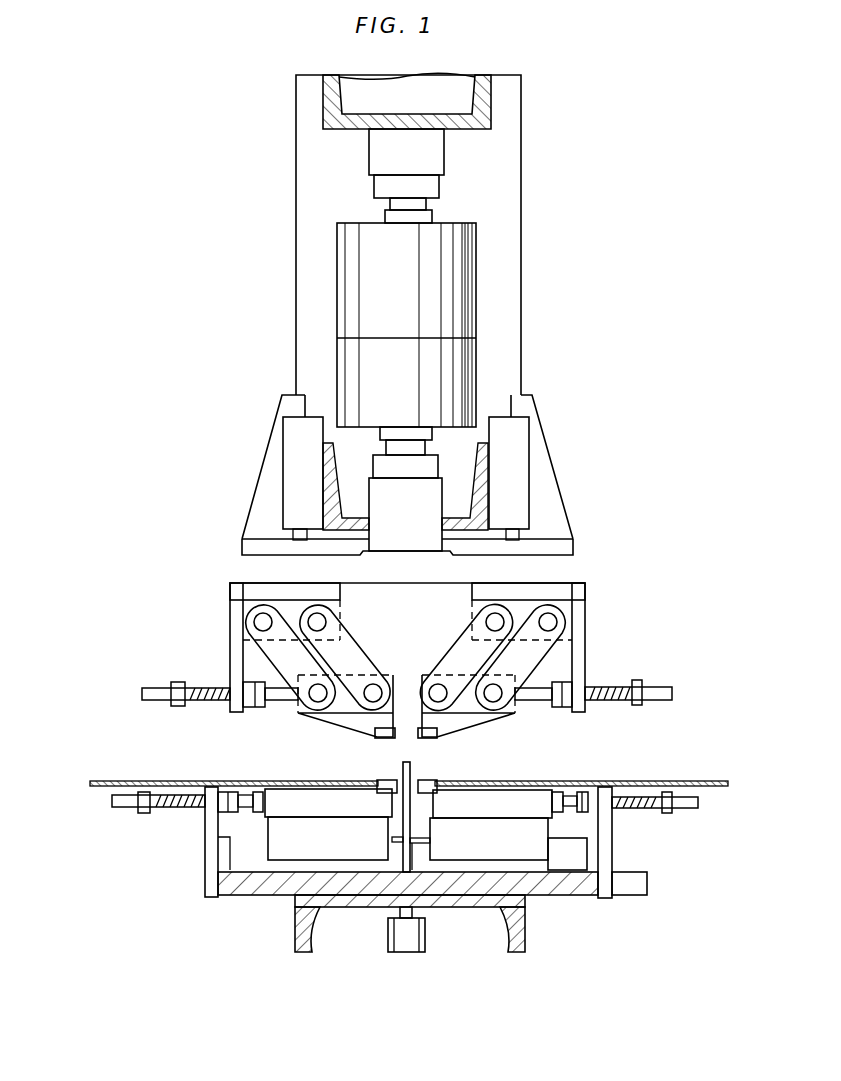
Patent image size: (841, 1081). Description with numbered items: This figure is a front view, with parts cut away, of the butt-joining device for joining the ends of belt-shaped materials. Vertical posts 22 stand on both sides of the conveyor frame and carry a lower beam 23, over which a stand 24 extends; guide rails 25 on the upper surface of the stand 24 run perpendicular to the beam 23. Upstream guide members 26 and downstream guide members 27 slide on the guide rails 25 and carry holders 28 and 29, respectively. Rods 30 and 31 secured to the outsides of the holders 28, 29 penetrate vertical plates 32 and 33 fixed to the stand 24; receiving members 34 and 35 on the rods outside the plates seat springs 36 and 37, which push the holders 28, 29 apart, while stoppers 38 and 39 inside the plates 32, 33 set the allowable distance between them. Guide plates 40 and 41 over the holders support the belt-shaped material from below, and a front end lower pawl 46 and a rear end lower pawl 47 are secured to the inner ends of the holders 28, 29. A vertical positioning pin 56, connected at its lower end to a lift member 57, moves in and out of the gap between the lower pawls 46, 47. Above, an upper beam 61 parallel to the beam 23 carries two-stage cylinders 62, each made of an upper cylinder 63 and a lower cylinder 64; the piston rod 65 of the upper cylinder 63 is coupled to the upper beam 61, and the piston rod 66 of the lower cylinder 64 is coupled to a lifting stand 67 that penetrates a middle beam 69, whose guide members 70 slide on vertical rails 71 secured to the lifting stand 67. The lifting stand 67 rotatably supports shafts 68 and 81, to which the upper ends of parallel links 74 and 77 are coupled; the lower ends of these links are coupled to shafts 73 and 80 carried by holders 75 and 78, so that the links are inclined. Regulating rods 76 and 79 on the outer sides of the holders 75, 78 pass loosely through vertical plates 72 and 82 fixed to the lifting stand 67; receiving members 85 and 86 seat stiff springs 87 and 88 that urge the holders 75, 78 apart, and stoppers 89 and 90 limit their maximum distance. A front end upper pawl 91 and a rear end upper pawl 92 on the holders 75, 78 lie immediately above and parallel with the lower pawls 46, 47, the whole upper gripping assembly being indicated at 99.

The vertical posts 22 is at (515, 155).
The beam 23 is at (525, 928).
The stand 24 is at (236, 896).
The guide rails 25 is at (262, 896).
The guide members 26 is at (489, 839).
The guide members 27 is at (328, 838).
The holder 28 is at (525, 790).
The holder 29 is at (300, 789).
The rod 30 is at (698, 802).
The rod 31 is at (112, 800).
The vertical plate 32 is at (612, 858).
The vertical plate 33 is at (205, 872).
The receiving member 34 is at (667, 815).
The receiving member 35 is at (143, 815).
The spring 36 is at (645, 810).
The spring 37 is at (178, 809).
The stopper 38 is at (567, 854).
The stopper 39 is at (230, 810).
The guide plate 40 is at (648, 781).
The guide plate 41 is at (160, 781).
The front end lower pawl 46 is at (430, 792).
The rear end lower pawl 47 is at (385, 792).
The positioning pin 56 is at (403, 850).
The lift member 57 is at (425, 930).
The upper beam 61 is at (488, 103).
The two-stage cylinder 62 is at (482, 290).
The upper cylinder 63 is at (455, 223).
The lower cylinder 64 is at (470, 355).
The piston rod 65 is at (390, 205).
The piston rod 66 is at (394, 446).
The lifting stand 67 is at (572, 567).
The shafts 68 is at (545, 612).
The middle beam 69 is at (472, 482).
The guide members 70 is at (290, 460).
The vertical rails 71 is at (300, 400).
The vertical plate 72 is at (585, 609).
The shafts 73 is at (435, 683).
The parallel links 74 is at (460, 647).
The holder 75 is at (468, 730).
The regulating rod 76 is at (660, 688).
The parallel links 77 is at (353, 640).
The holder 78 is at (350, 728).
The regulating rod 79 is at (155, 690).
The shafts 80 is at (372, 683).
The shafts 81 is at (303, 612).
The vertical plate 82 is at (236, 613).
The receiving member 85 is at (636, 682).
The receiving member 86 is at (177, 684).
The spring 87 is at (605, 702).
The spring 88 is at (206, 702).
The stopper 89 is at (562, 709).
The stopper 90 is at (250, 709).
The front end upper pawl 91 is at (428, 740).
The rear end upper pawl 92 is at (385, 740).
The gripper unit 99 is at (550, 421).